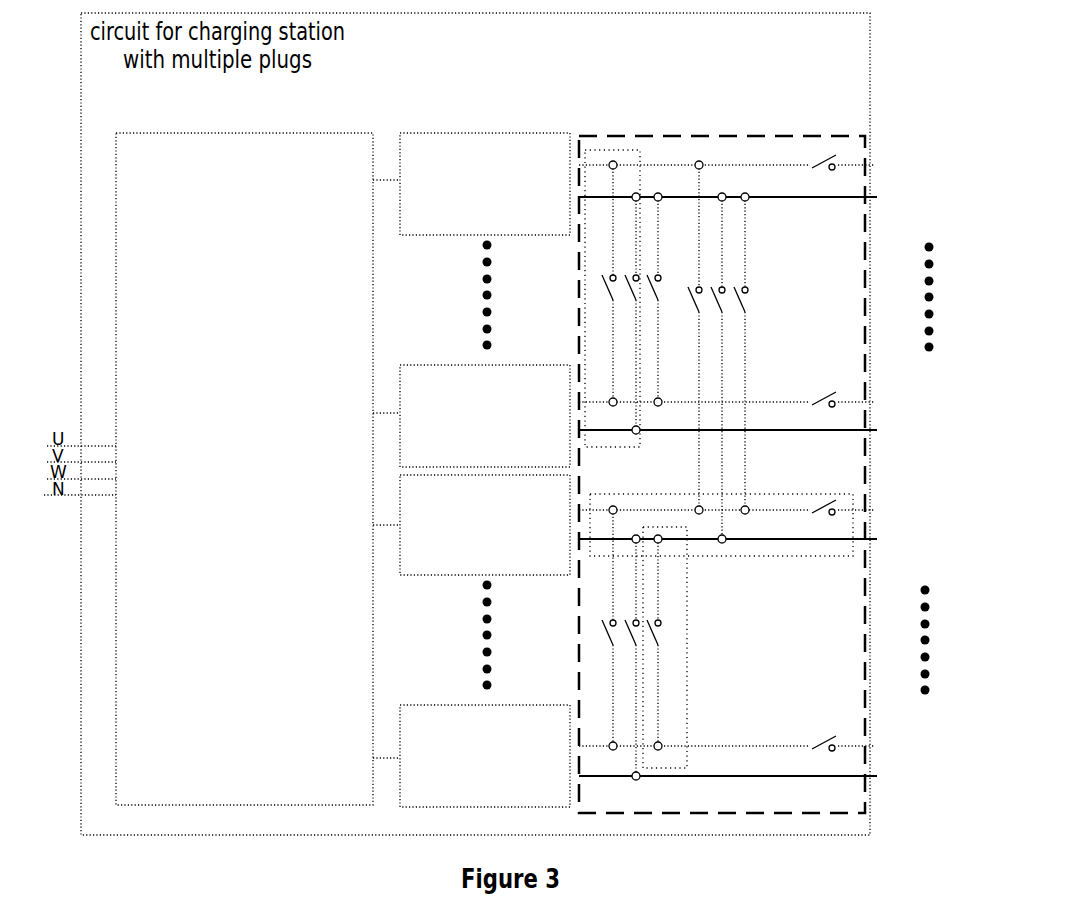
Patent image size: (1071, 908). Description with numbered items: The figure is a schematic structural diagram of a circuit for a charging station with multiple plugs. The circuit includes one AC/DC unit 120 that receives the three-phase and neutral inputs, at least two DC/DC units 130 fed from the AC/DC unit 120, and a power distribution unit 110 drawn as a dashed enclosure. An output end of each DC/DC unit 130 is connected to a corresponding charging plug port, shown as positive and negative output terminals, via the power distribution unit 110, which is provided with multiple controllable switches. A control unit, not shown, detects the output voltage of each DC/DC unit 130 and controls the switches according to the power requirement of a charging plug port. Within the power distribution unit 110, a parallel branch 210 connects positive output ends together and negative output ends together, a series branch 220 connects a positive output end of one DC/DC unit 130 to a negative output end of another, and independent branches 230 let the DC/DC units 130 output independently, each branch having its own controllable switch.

The power distribution unit 110 is at (772, 135).
The AC/DC unit 120 is at (236, 133).
The DC/DC unit 130 is at (457, 133).
The parallel branch 210 is at (590, 448).
The series branch 220 is at (687, 722).
The independent branch 230 is at (750, 557).